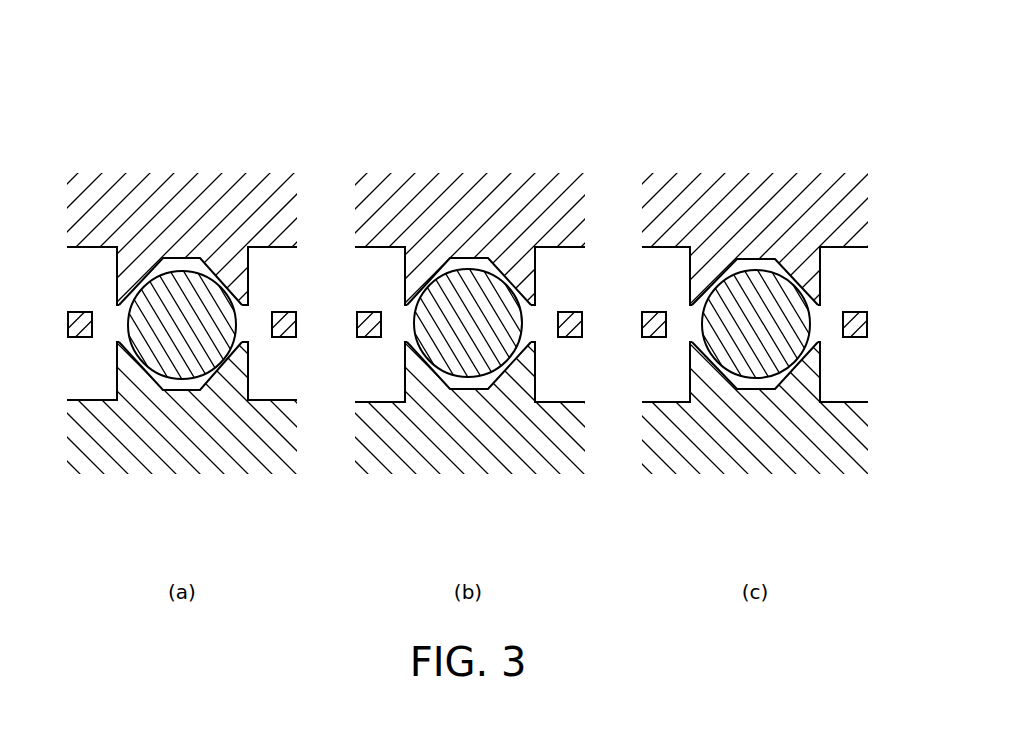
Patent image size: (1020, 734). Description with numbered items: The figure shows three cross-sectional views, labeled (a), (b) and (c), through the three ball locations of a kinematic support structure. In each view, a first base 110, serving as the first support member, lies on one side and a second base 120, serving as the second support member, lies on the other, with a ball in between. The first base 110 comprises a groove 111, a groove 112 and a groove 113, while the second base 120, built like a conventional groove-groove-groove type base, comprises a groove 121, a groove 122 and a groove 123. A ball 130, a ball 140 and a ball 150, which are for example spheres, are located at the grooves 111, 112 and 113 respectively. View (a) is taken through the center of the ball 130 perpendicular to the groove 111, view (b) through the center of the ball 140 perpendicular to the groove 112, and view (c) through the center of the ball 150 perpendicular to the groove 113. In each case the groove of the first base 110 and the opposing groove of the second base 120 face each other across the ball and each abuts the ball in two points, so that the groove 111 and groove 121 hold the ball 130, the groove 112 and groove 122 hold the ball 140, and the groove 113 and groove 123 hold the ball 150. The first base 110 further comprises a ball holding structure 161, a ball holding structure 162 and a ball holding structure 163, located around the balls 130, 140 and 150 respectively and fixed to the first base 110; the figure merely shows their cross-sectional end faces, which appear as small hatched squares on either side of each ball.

The first base 110 is at (215, 224).
The second base 120 is at (503, 224).
The groove 121 is at (190, 263).
The groove 122 is at (483, 260).
The groove 123 is at (765, 262).
The groove 111 is at (205, 381).
The groove 112 is at (480, 388).
The groove 113 is at (768, 388).
The ball 130 is at (147, 297).
The ball 140 is at (435, 297).
The ball 150 is at (720, 298).
The ball holding structure 161 is at (85, 327).
The ball holding structure 162 is at (368, 328).
The ball holding structure 163 is at (660, 324).